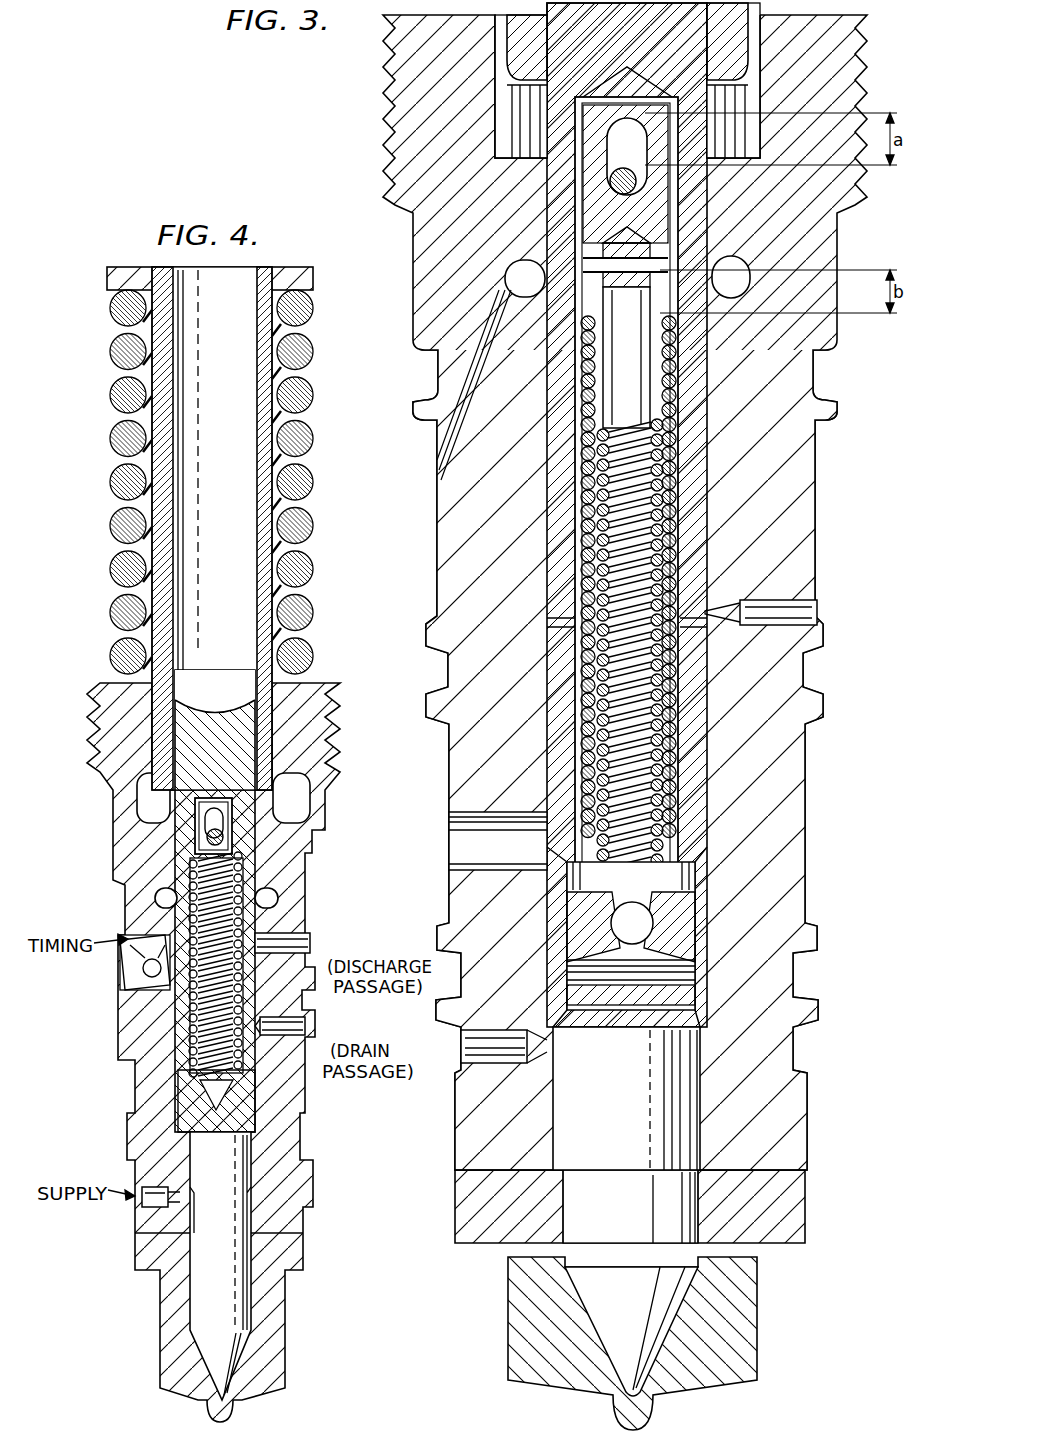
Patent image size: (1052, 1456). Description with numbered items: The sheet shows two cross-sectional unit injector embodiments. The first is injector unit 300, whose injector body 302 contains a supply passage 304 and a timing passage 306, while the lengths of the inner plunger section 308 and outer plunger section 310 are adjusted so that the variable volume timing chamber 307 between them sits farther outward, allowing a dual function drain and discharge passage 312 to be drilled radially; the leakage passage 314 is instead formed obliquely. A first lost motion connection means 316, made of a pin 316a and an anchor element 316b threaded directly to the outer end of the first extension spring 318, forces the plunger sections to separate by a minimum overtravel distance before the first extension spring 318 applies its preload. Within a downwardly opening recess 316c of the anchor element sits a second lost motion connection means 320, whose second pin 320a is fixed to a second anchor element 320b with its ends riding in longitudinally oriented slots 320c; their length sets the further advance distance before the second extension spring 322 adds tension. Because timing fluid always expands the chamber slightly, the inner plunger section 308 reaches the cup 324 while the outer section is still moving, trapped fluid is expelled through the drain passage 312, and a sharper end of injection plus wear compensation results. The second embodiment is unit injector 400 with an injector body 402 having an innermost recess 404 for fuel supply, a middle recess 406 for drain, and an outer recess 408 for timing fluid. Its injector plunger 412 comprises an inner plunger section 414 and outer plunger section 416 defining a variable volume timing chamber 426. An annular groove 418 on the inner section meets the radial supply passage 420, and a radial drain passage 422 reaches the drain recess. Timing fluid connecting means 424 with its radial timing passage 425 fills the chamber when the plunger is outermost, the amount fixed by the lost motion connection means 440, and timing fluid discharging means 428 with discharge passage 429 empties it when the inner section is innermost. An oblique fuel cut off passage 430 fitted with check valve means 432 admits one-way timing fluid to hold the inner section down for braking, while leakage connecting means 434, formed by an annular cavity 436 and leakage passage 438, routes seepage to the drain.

In FIG. 3, the injector unit 300 is at (355, 115).
In FIG. 3, the injector body 302 is at (838, 245).
In FIG. 3, the supply passage 304 is at (626, 1098).
In FIG. 3, the timing passage 306 is at (500, 862).
In FIG. 3, the variable volume timing chamber 307 is at (550, 618).
In FIG. 3, the inner plunger section 308 is at (692, 1212).
In FIG. 3, the outer plunger section 310 is at (703, 383).
In FIG. 3, the drain and discharge passage 312 is at (793, 595).
In FIG. 3, the leakage passage 314 is at (438, 470).
In FIG. 3, the first lost motion connection means 316 is at (677, 174).
In FIG. 3, the pin 316a is at (640, 183).
In FIG. 3, the anchor element 316b is at (665, 128).
In FIG. 3, the downwardly opening recess 316c is at (583, 363).
In FIG. 3, the first extension spring 318 is at (580, 552).
In FIG. 3, the second lost motion connection means 320 is at (630, 316).
In FIG. 3, the second pin 320a is at (663, 263).
In FIG. 3, the second anchor element 320b is at (643, 395).
In FIG. 3, the longitudinally oriented slots 320c is at (587, 287).
In FIG. 3, the second extension spring 322 is at (577, 703).
In FIG. 3, the cup 324 is at (752, 1330).
In FIG. 4, the unit injector 400 is at (107, 665).
In FIG. 4, the injector body 402 is at (310, 817).
In FIG. 4, the innermost recess 404 is at (310, 1165).
In FIG. 4, the middle recess 406 is at (300, 1082).
In FIG. 4, the outer recess 408 is at (310, 885).
In FIG. 4, the injector plunger 412 is at (255, 810).
In FIG. 4, the inner plunger section 414 is at (245, 1280).
In FIG. 4, the outer plunger section 416 is at (243, 736).
In FIG. 4, the annular groove 418 is at (240, 1180).
In FIG. 4, the supply passage 420 is at (150, 1200).
In FIG. 4, the drain passage 422 is at (307, 1062).
In FIG. 4, the timing fluid connecting means 424 is at (315, 943).
In FIG. 4, the timing passage 425 is at (310, 913).
In FIG. 4, the variable volume timing chamber 426 is at (283, 1010).
In FIG. 4, the timing fluid discharging means 428 is at (307, 1033).
In FIG. 4, the discharge passage 429 is at (317, 1005).
In FIG. 4, the fuel cut off passage 430 is at (133, 1008).
In FIG. 4, the check valve means 432 is at (113, 968).
In FIG. 4, the leakage connecting means 434 is at (163, 887).
In FIG. 4, the annular cavity 436 is at (140, 910).
In FIG. 4, the leakage passage 438 is at (128, 1079).
In FIG. 4, the lost motion connection means 440 is at (190, 812).